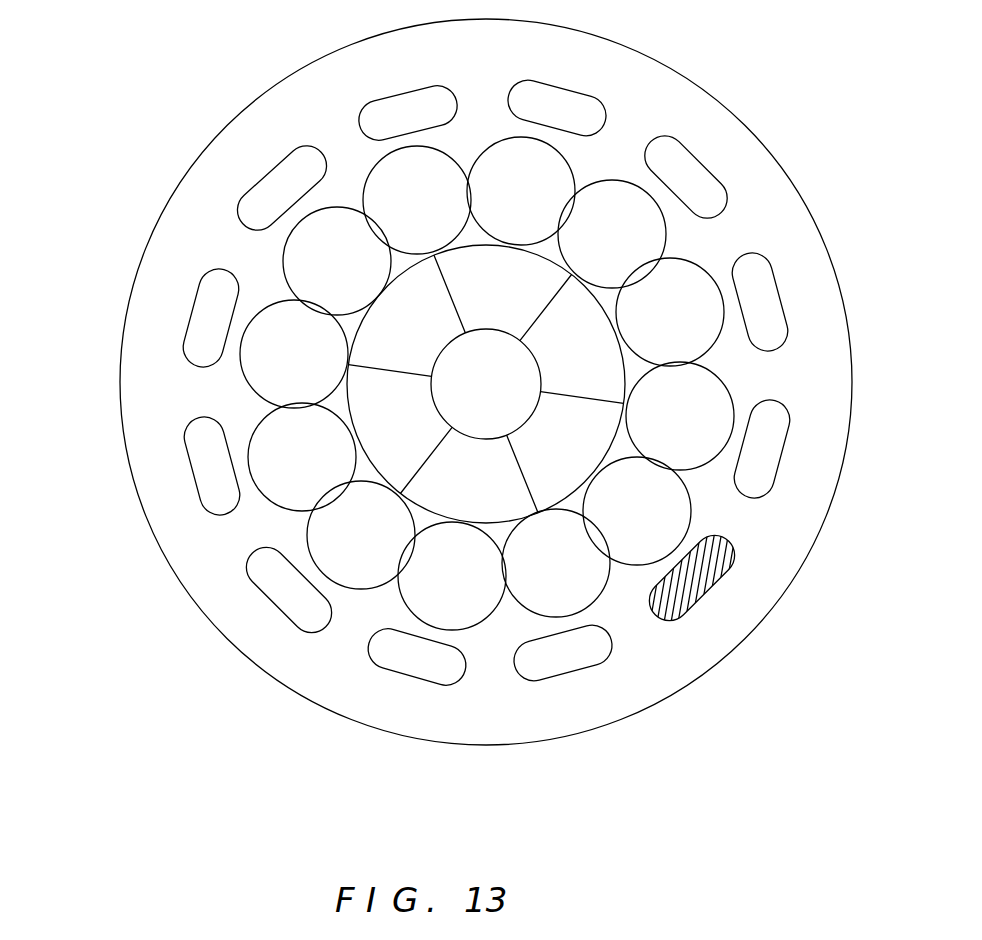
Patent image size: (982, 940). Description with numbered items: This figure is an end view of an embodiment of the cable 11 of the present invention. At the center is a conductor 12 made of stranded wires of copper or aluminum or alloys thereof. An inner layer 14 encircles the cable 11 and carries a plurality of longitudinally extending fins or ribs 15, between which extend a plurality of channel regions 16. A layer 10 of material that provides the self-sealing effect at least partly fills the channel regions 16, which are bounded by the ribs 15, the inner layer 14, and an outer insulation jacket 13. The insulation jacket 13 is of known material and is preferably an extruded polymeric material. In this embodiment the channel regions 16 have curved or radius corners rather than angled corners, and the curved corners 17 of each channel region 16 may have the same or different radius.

The layer of self-sealing material 10 is at (695, 590).
The cable 11 is at (468, 393).
The conductor 12 is at (557, 572).
The outer insulation jacket 13 is at (263, 93).
The inner layer 14 is at (286, 196).
The fins or ribs 15 is at (255, 555).
The channel regions 16 is at (408, 664).
The curved corners 17 is at (221, 433).